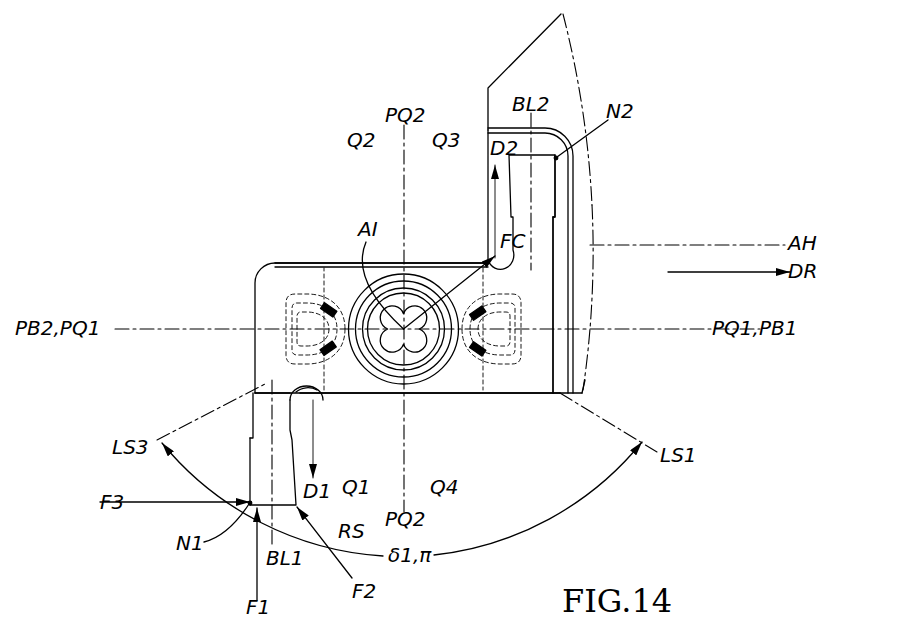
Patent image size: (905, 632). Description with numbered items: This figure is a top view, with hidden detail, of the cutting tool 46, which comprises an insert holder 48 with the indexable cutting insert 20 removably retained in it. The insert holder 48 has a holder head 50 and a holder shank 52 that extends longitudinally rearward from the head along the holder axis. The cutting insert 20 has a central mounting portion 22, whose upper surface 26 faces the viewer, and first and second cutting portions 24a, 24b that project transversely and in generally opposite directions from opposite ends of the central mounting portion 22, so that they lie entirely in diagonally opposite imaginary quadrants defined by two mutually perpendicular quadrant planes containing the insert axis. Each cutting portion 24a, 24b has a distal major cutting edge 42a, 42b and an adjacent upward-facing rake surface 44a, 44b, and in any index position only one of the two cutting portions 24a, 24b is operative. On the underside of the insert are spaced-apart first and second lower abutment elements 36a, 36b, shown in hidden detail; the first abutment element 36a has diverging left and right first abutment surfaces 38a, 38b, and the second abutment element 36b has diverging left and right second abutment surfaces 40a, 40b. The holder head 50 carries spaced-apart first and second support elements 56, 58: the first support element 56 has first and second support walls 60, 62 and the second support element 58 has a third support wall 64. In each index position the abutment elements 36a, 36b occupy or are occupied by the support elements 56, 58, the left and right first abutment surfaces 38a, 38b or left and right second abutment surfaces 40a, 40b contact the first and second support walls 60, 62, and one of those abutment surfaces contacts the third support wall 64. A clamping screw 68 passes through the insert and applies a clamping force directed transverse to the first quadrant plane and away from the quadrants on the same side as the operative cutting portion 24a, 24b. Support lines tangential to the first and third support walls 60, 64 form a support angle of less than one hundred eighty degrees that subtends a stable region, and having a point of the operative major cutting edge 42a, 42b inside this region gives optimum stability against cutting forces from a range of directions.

The indexable cutting insert 20 is at (287, 283).
The central mounting portion 22 is at (326, 429).
The first cutting portion 24a is at (251, 437).
The second cutting portion 24b is at (557, 183).
The upper surface 26 is at (385, 394).
The first lower abutment element 36a is at (312, 340).
The second lower abutment element 36b is at (497, 342).
The left first abutment surface 38a is at (326, 308).
The right first abutment surface 38b is at (323, 400).
The left second abutment surface 40a is at (477, 352).
The right second abutment surface 40b is at (474, 310).
The first major cutting edge 42a is at (296, 508).
The second major cutting edge 42b is at (541, 157).
The first rake surface 44a is at (265, 478).
The second rake surface 44b is at (543, 175).
The cutting tool 46 is at (583, 70).
The insert holder 48 is at (511, 93).
The holder head 50 is at (315, 262).
The holder shank 52 is at (586, 238).
The first support element 56 is at (495, 320).
The second support element 58 is at (314, 318).
The first support wall 60 is at (460, 385).
The second support wall 62 is at (475, 312).
The third support wall 64 is at (318, 388).
The clamping screw 68 is at (420, 346).